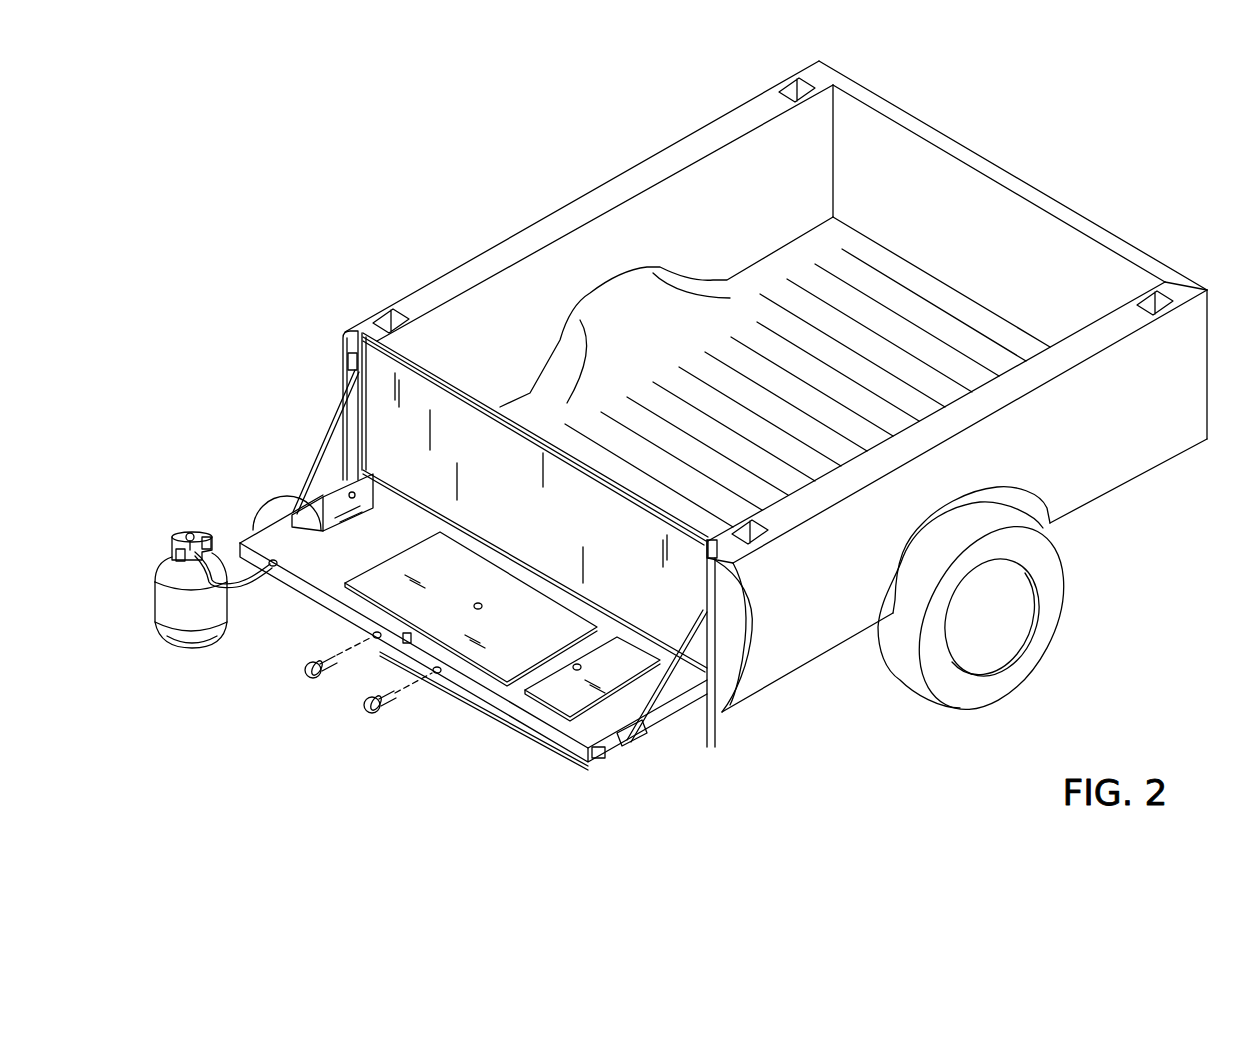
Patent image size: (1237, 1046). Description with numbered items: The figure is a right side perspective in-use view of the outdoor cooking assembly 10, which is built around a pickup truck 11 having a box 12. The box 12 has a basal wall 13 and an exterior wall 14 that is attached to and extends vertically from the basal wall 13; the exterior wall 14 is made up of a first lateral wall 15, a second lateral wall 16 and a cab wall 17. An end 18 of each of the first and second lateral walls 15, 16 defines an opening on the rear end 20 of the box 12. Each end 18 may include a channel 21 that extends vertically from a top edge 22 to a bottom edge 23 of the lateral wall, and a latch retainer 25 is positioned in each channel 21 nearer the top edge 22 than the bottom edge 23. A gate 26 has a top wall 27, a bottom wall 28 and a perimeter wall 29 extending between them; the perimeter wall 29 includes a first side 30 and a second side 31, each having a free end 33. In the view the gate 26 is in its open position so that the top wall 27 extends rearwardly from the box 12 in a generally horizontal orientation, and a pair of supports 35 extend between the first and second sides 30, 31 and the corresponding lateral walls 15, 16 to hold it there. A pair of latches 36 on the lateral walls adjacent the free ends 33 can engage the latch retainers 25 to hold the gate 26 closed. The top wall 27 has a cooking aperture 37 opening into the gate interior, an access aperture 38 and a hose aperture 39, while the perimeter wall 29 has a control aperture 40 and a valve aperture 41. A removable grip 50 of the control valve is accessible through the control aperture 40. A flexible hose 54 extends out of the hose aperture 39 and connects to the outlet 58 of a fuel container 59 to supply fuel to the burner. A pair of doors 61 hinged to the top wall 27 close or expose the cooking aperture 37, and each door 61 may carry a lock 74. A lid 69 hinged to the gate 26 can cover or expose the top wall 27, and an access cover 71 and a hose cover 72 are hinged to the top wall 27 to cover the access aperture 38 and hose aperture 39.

The outdoor cooking assembly 10 is at (562, 175).
The pickup truck 11 is at (1182, 260).
The box 12 is at (1209, 340).
The basal wall 13 is at (921, 306).
The exterior wall 14 is at (1215, 346).
The first lateral wall 15 is at (1133, 485).
The second lateral wall 16 is at (493, 248).
The cab wall 17 is at (1045, 193).
The end 18 is at (343, 353).
The rear end 20 is at (307, 376).
The channel 21 is at (352, 358).
The top edge 22 is at (528, 258).
The bottom edge 23 is at (829, 652).
The latch retainer 25 is at (345, 350).
The gate 26 is at (592, 758).
The top wall 27 is at (333, 568).
The bottom wall 28 is at (635, 737).
The perimeter wall 29 is at (530, 735).
The first side 30 is at (662, 722).
The second side 31 is at (246, 538).
The free end 33 is at (238, 544).
The support 35 is at (323, 458).
The latch 36 is at (600, 752).
The cooking aperture 37 is at (400, 640).
The access aperture 38 is at (500, 709).
The hose aperture 39 is at (266, 568).
The control aperture 40 is at (352, 660).
The valve aperture 41 is at (242, 565).
The removable grip 50 is at (313, 680).
The hose 54 is at (173, 625).
The outlet 58 is at (190, 533).
The fuel container 59 is at (177, 628).
The door 61 is at (373, 638).
The lid 69 is at (427, 347).
The access cover 71 is at (662, 655).
The hose cover 72 is at (340, 458).
The lock 74 is at (478, 603).